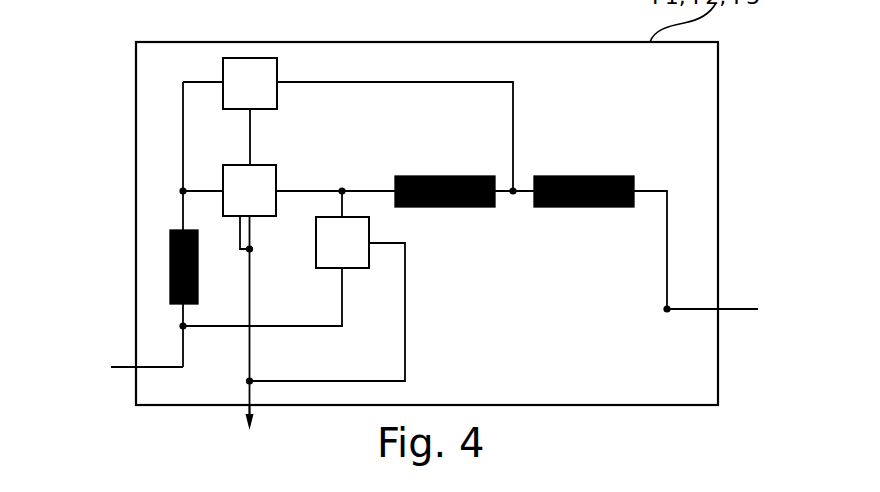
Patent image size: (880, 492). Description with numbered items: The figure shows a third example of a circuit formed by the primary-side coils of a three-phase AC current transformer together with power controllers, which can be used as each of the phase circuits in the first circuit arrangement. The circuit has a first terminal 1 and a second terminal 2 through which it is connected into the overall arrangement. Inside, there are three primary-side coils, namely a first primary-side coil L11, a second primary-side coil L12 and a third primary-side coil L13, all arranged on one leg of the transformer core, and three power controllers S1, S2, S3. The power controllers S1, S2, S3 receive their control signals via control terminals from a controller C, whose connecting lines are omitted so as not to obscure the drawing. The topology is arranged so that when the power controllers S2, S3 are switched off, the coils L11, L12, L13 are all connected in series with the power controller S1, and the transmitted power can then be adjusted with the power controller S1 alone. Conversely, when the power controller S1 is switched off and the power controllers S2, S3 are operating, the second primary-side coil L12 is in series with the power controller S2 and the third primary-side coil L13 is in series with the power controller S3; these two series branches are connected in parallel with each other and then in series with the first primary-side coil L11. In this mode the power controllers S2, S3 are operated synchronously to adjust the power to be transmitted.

The first terminal 1 is at (718, 306).
The second terminal 2 is at (137, 364).
The power controller S1 is at (249, 190).
The power controller S2 is at (342, 242).
The power controller S3 is at (250, 83).
The first primary-side coil L11 is at (584, 177).
The second primary-side coil L12 is at (445, 177).
The third primary-side coil L13 is at (208, 267).
The controller C is at (249, 435).